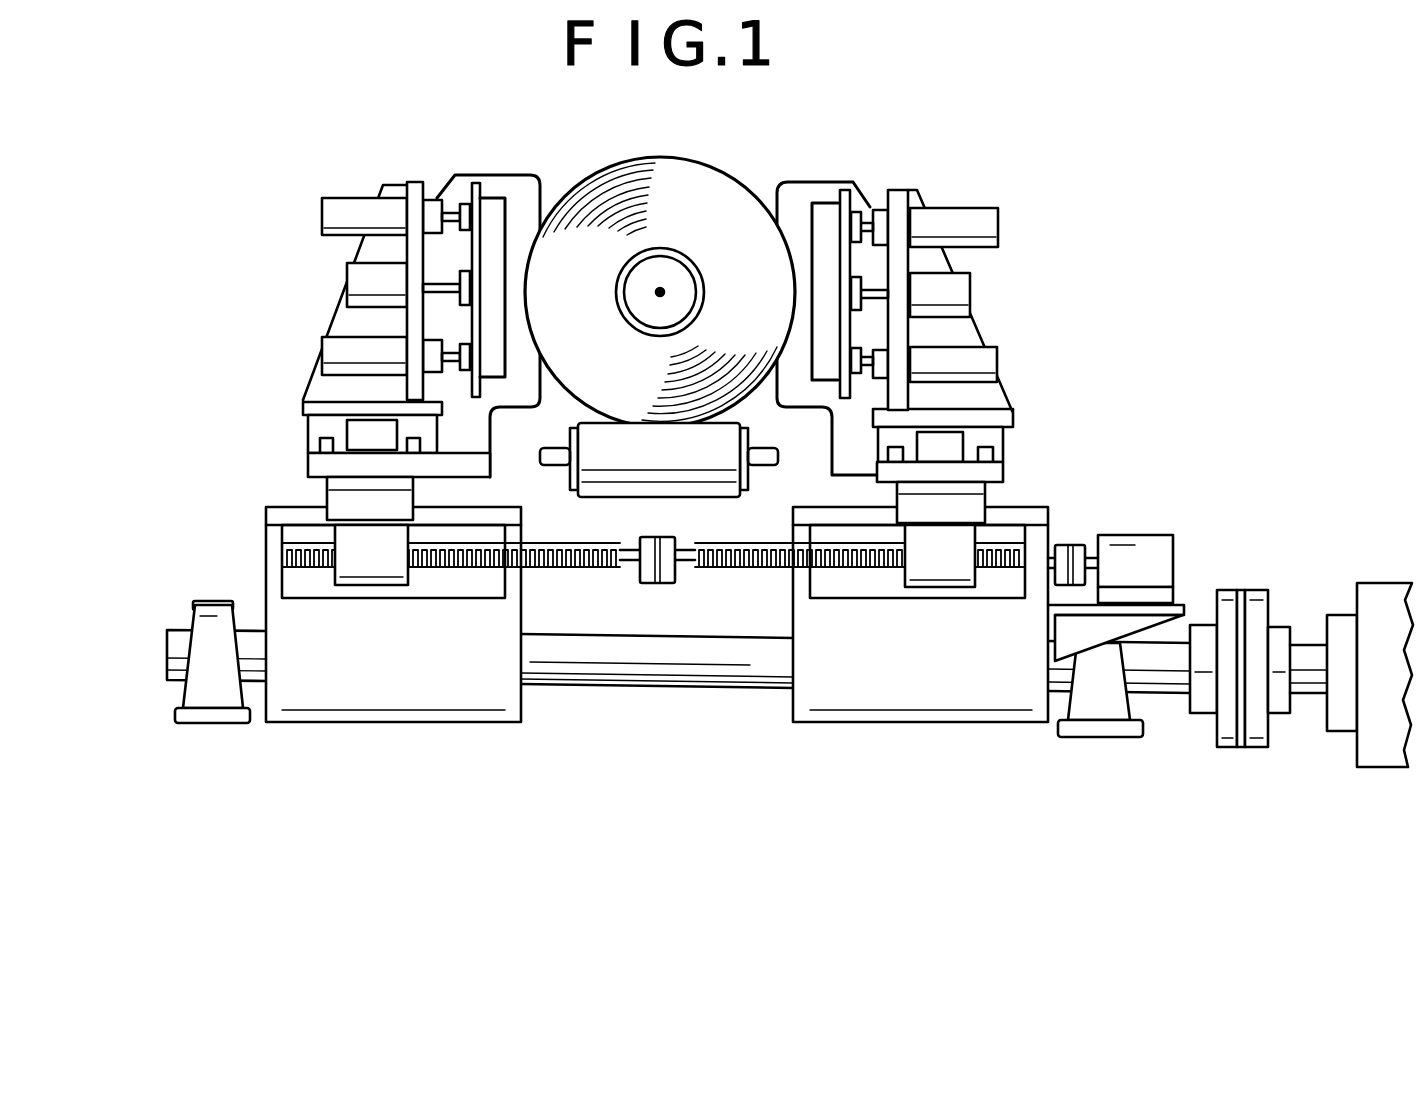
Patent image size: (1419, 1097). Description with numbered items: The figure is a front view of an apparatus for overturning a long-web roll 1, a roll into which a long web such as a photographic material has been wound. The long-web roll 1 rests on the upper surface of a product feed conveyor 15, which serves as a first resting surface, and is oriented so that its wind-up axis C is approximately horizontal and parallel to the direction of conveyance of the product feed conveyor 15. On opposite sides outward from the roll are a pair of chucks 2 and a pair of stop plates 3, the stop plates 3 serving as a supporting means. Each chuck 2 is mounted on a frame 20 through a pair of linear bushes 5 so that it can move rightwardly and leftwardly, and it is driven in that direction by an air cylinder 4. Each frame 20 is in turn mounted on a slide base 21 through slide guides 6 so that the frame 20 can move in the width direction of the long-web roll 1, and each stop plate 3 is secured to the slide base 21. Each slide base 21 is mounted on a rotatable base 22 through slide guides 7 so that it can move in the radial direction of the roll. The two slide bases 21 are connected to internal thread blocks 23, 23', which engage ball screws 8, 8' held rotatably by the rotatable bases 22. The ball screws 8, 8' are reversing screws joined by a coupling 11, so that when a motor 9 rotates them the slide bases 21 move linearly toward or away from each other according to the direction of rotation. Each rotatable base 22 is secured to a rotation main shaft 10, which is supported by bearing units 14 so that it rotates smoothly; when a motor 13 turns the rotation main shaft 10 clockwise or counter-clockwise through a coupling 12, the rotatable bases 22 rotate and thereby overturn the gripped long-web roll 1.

The long-web roll 1 is at (728, 170).
The wind-up axis C is at (667, 292).
The chuck 2 is at (498, 178).
The stop plate 3 is at (522, 175).
The air cylinder 4 is at (347, 277).
The linear bush 5 is at (322, 208).
The slide guide 6 is at (313, 427).
The slide guide 7 is at (333, 500).
The ball screw 8 is at (451, 585).
The ball screw 8' is at (860, 585).
The motor 9 is at (1147, 540).
The rotation main shaft 10 is at (680, 673).
The coupling 11 is at (652, 582).
The coupling 12 is at (1215, 733).
The motor 13 is at (1377, 767).
The bearing unit 14 is at (207, 717).
The product feed conveyor 15 is at (713, 498).
The frame 20 is at (347, 320).
The slide base 21 is at (312, 465).
The rotatable base 22 is at (440, 700).
The internal thread block 23 is at (371, 589).
The internal thread block 23' is at (945, 596).